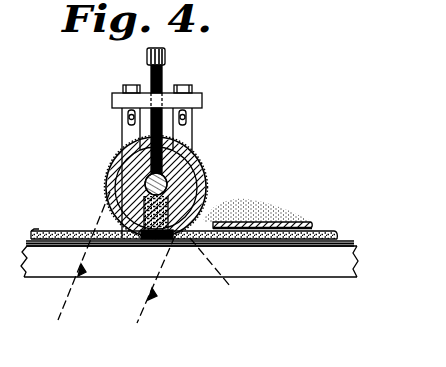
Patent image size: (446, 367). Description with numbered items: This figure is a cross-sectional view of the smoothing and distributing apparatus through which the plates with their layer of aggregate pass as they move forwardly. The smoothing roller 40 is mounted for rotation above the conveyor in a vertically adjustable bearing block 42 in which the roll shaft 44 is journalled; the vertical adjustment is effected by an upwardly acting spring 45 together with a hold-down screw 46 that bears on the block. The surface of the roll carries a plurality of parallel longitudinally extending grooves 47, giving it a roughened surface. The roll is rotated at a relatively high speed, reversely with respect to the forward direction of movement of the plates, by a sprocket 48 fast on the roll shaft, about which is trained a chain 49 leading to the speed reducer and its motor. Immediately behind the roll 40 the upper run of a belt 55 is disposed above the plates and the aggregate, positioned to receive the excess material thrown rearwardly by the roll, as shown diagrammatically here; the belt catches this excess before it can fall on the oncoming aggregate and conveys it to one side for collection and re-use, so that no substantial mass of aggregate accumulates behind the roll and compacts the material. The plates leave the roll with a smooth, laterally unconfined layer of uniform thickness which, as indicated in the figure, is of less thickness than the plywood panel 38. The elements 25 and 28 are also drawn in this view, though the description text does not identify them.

The base plate 25 is at (311, 262).
The backing layer 28 is at (343, 245).
The plywood panel 38 is at (337, 238).
The smoothing roller 40 is at (193, 152).
The bearing block 42 is at (203, 160).
The roll shaft 44 is at (203, 190).
The upwardly acting spring 45 is at (202, 279).
The hold-down screw 46 is at (151, 126).
The groove 47 is at (108, 160).
The sprocket 48 is at (103, 178).
The chain 49 is at (97, 215).
The belt 55 is at (303, 220).